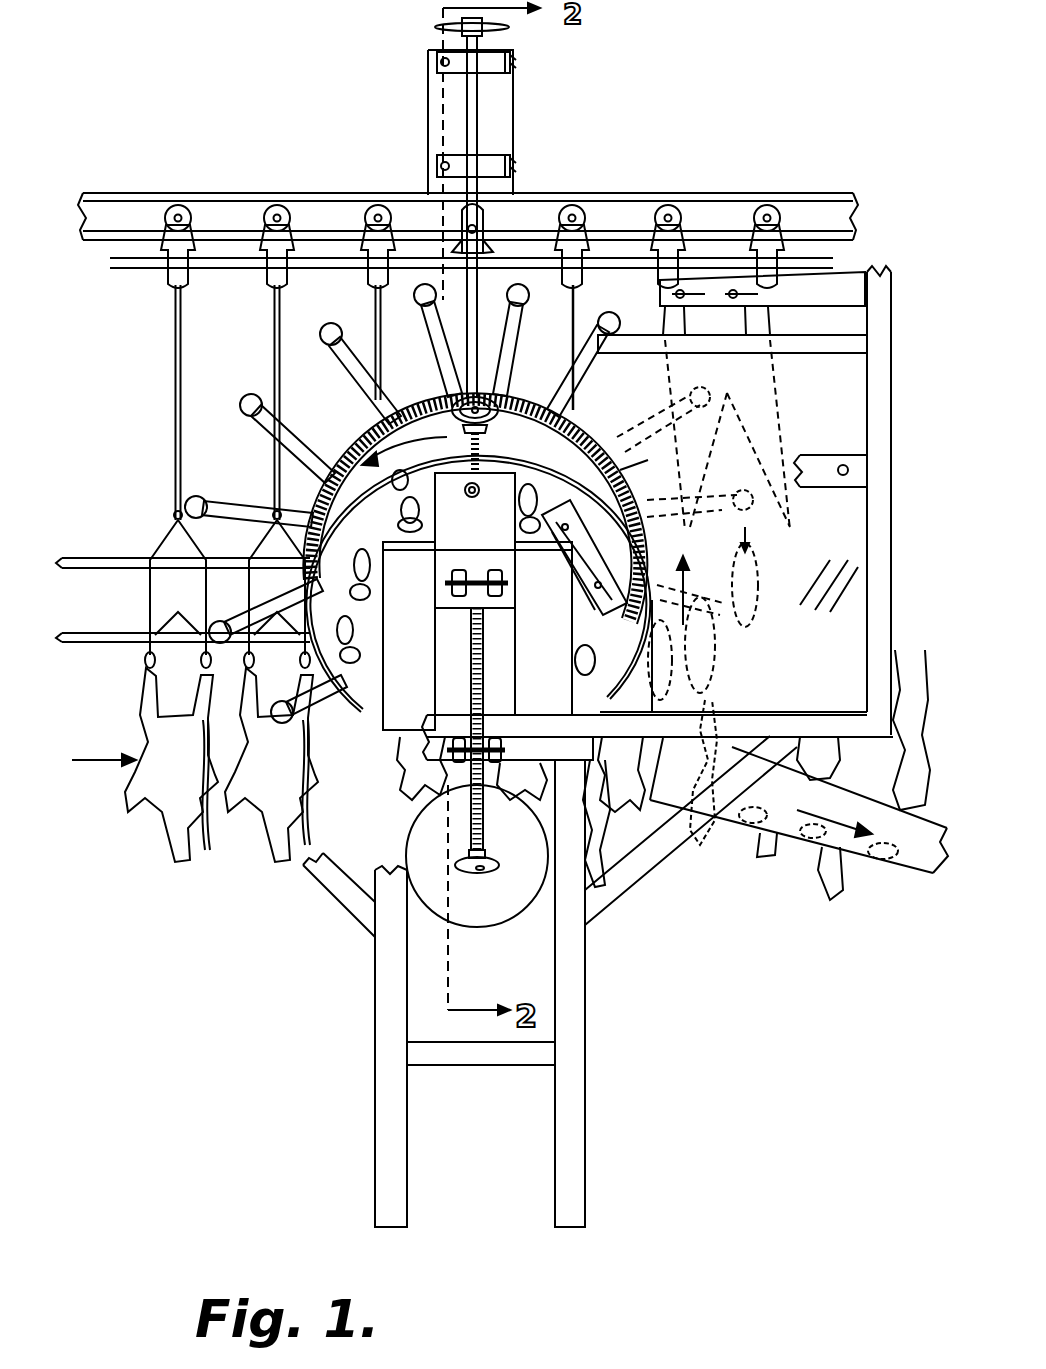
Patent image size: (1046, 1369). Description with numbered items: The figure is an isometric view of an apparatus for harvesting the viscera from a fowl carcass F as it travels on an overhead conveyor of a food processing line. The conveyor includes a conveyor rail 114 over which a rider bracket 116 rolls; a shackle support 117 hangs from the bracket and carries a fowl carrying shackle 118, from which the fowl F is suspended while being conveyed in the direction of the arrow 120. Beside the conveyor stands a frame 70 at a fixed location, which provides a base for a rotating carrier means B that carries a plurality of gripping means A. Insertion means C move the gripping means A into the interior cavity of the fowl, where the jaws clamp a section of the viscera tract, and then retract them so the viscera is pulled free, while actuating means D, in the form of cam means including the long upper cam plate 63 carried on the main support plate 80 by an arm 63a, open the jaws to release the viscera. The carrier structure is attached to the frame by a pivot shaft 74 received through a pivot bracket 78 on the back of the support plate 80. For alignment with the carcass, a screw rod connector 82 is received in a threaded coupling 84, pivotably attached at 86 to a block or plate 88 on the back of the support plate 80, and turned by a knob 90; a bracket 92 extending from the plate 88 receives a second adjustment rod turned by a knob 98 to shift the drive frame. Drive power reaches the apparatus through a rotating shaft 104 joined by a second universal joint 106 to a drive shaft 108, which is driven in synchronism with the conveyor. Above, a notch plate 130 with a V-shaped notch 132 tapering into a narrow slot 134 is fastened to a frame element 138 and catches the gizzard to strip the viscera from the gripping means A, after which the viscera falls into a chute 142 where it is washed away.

The upper cam plate 63 is at (650, 556).
The arm 63a is at (572, 585).
The frame 70 is at (582, 998).
The pivot shaft 74 is at (617, 693).
The pivot bracket 78 is at (463, 742).
The main support plate 80 is at (621, 775).
The screw rod connector 82 is at (488, 800).
The threaded coupling 84 is at (497, 740).
The pivot attachment 86 is at (470, 598).
The block or plate 88 is at (437, 562).
The knob 90 is at (493, 873).
The bracket 92 is at (457, 583).
The knob 98 is at (492, 420).
The rotating shaft 104 is at (478, 352).
The second universal joint 106 is at (483, 255).
The drive shaft 108 is at (478, 118).
The conveyor rail 114 is at (612, 193).
The rider bracket 116 is at (785, 233).
The shackle support 117 is at (176, 402).
The fowl carrying shackle 118 is at (150, 597).
The arrow 120 is at (103, 765).
The notch plate 130 is at (830, 320).
The V-shaped notch 132 is at (748, 443).
The narrow slot 134 is at (733, 392).
The frame element 138 is at (810, 287).
The chute 142 is at (837, 862).
The gripping means A is at (246, 392).
The carrier means B is at (333, 490).
The insertion means C is at (305, 427).
The actuating means D is at (640, 464).
The fowl carcass F is at (163, 820).